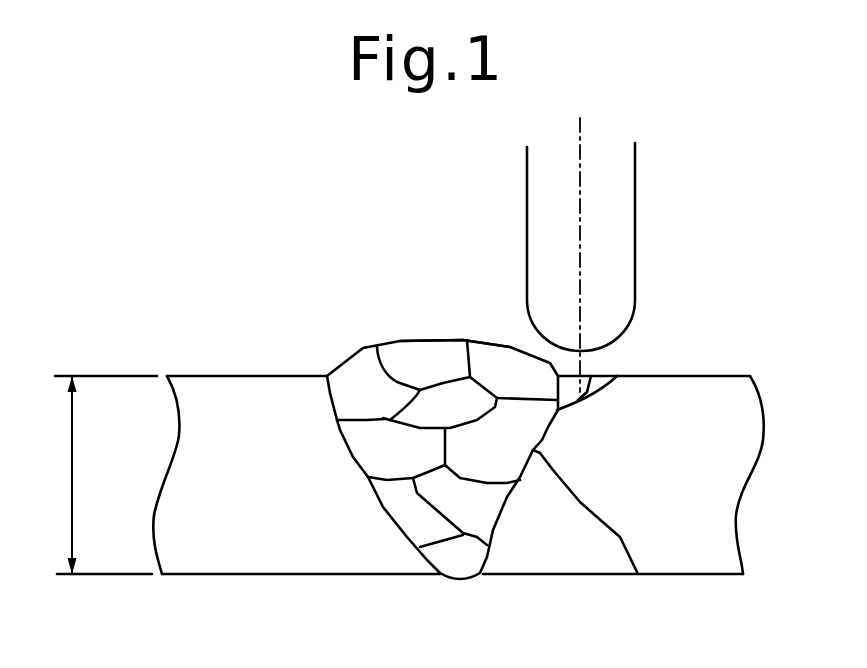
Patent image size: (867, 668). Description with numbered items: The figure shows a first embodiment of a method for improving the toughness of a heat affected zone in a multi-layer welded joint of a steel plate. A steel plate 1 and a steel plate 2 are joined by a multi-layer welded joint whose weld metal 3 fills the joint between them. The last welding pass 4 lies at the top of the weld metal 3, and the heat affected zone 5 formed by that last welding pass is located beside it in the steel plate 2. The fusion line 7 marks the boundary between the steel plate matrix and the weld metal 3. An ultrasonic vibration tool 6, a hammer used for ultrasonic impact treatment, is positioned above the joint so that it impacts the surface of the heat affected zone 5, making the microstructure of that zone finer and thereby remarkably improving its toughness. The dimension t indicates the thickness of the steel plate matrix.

The steel plate 1 is at (237, 390).
The steel plate 2 is at (700, 392).
The weld metal 3 is at (378, 520).
The last welding pass 4 is at (507, 367).
The heat affected zone 5 is at (617, 376).
The ultrasonic vibration tool 6 is at (617, 215).
The fusion line 7 is at (637, 572).
The thickness of the steel plate matrix t is at (98, 475).